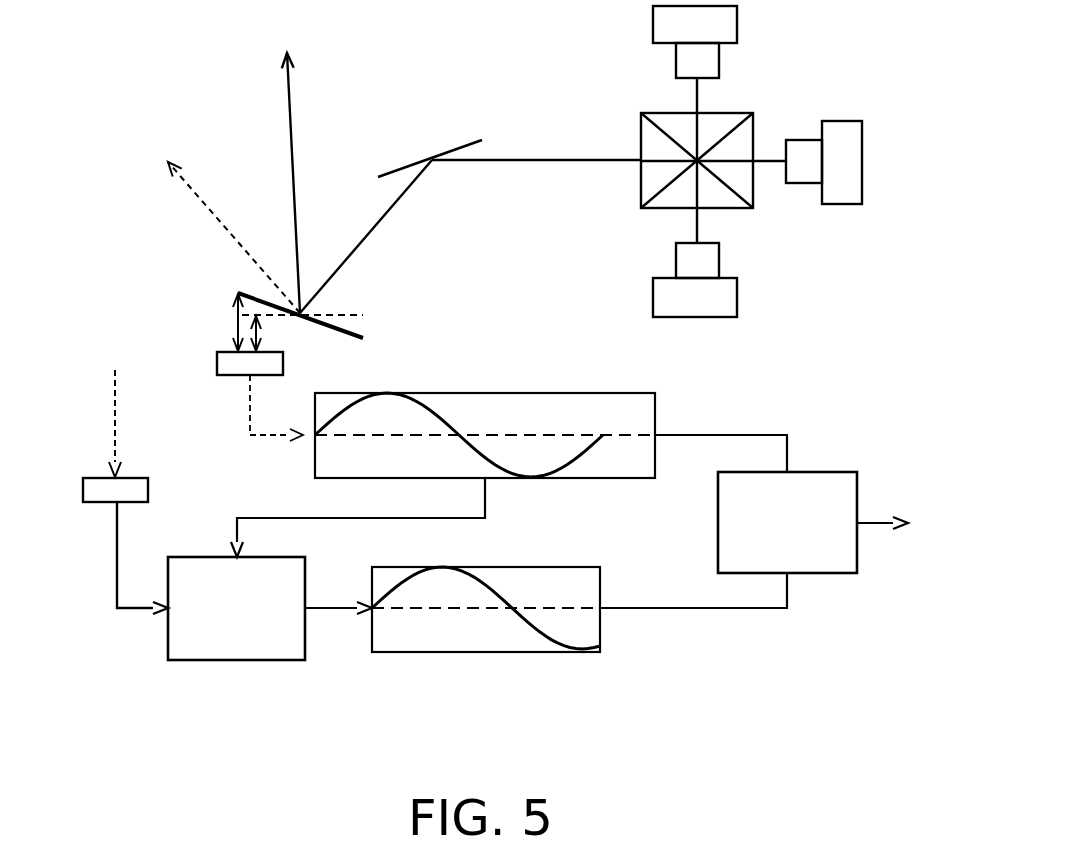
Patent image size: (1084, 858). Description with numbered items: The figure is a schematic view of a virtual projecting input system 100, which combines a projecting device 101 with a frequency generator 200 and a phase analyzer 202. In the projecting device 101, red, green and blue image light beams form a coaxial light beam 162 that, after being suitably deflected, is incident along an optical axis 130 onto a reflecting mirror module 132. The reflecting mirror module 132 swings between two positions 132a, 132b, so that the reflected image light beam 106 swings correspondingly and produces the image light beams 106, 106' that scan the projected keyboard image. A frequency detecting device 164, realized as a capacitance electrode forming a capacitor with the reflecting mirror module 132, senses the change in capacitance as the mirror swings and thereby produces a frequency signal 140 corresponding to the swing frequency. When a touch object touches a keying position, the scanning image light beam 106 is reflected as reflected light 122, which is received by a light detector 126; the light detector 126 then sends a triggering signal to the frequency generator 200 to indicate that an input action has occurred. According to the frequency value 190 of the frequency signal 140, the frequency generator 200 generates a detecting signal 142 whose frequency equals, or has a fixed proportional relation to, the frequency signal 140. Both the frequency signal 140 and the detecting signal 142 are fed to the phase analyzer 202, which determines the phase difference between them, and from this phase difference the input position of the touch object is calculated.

The virtual projecting input system 100 is at (887, 695).
The projecting device 101 is at (785, 63).
The image light beam 106 is at (309, 167).
The image light beam 106' is at (234, 216).
The reflected light 122 is at (117, 418).
The light detector 126 is at (140, 487).
The optical axis 130 is at (388, 212).
The reflecting mirror module 132 is at (303, 300).
The position of reflecting mirror module 132a is at (363, 315).
The position of reflecting mirror module 132b is at (363, 336).
The frequency signal 140 is at (669, 403).
The detecting signal 142 is at (600, 546).
The coaxial light beam 162 is at (563, 158).
The frequency detecting device 164 is at (223, 362).
The frequency value 190 is at (487, 505).
The frequency generator 200 is at (237, 660).
The phase analyzer 202 is at (822, 573).